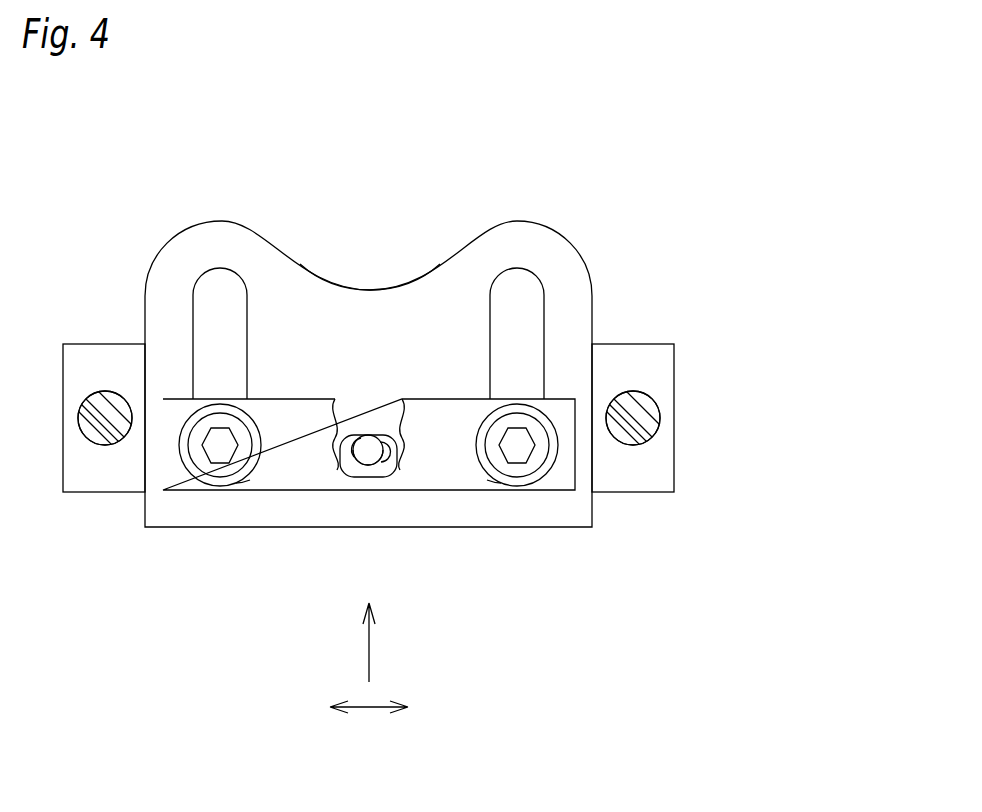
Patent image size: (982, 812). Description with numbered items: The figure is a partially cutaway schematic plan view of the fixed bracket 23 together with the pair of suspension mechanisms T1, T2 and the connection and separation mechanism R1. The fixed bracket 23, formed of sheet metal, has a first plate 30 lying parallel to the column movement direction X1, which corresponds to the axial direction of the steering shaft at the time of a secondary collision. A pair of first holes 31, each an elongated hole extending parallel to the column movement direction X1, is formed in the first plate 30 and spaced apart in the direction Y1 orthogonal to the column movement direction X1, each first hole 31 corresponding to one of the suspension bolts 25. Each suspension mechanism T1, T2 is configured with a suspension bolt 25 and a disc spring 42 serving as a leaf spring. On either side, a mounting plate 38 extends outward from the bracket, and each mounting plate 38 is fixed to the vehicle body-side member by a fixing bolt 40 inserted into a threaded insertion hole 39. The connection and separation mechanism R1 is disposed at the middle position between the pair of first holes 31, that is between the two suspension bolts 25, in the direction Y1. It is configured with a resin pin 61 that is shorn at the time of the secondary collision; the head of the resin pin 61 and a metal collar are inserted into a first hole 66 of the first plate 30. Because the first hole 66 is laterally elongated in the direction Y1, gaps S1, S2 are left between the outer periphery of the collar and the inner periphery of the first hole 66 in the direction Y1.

The fixed bracket 23 is at (592, 318).
The first plate 30 is at (355, 303).
The first holes 31 is at (219, 283).
The mounting plates 38 is at (75, 370).
The threaded insertion hole 39 is at (86, 421).
The fixing bolt 40 is at (105, 430).
The disc spring 42 is at (193, 472).
The suspension bolt 25 is at (210, 478).
The suspension mechanism T1 is at (243, 480).
The suspension mechanism T2 is at (494, 480).
The resin pin 61 is at (350, 467).
The first hole 66 is at (380, 468).
The gap S1 is at (350, 445).
The gap S2 is at (385, 447).
The connection and separation mechanism R1 is at (367, 464).
The column movement direction X1 is at (369, 652).
The direction orthogonal to column movement direction Y1 is at (369, 710).